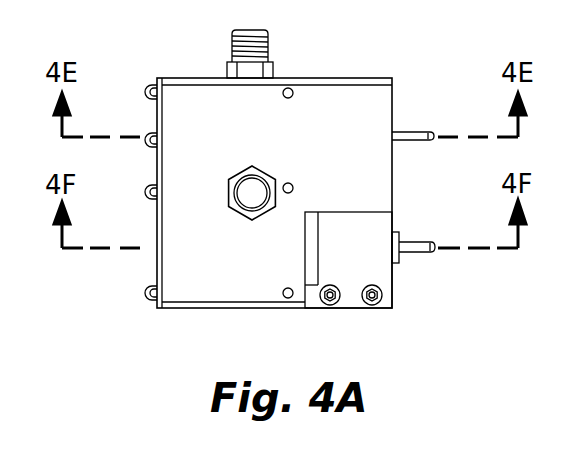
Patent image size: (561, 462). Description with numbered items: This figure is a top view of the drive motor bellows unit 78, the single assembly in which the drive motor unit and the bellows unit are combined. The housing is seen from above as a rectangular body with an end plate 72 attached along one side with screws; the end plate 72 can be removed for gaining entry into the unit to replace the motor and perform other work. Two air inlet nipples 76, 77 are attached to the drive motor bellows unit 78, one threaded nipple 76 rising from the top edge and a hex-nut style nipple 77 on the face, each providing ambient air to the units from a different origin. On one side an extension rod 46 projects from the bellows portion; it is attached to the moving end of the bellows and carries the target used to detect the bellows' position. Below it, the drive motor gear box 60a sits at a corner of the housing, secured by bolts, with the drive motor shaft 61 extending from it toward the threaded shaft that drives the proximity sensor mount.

The extension rod 46 is at (415, 141).
The drive motor shaft 61 is at (420, 253).
The drive motor gear box 60a is at (393, 302).
The end plate 72 is at (157, 165).
The air inlet nipple 76 is at (255, 29).
The air inlet nipple 77 is at (227, 196).
The drive motor bellows unit 78 is at (200, 280).